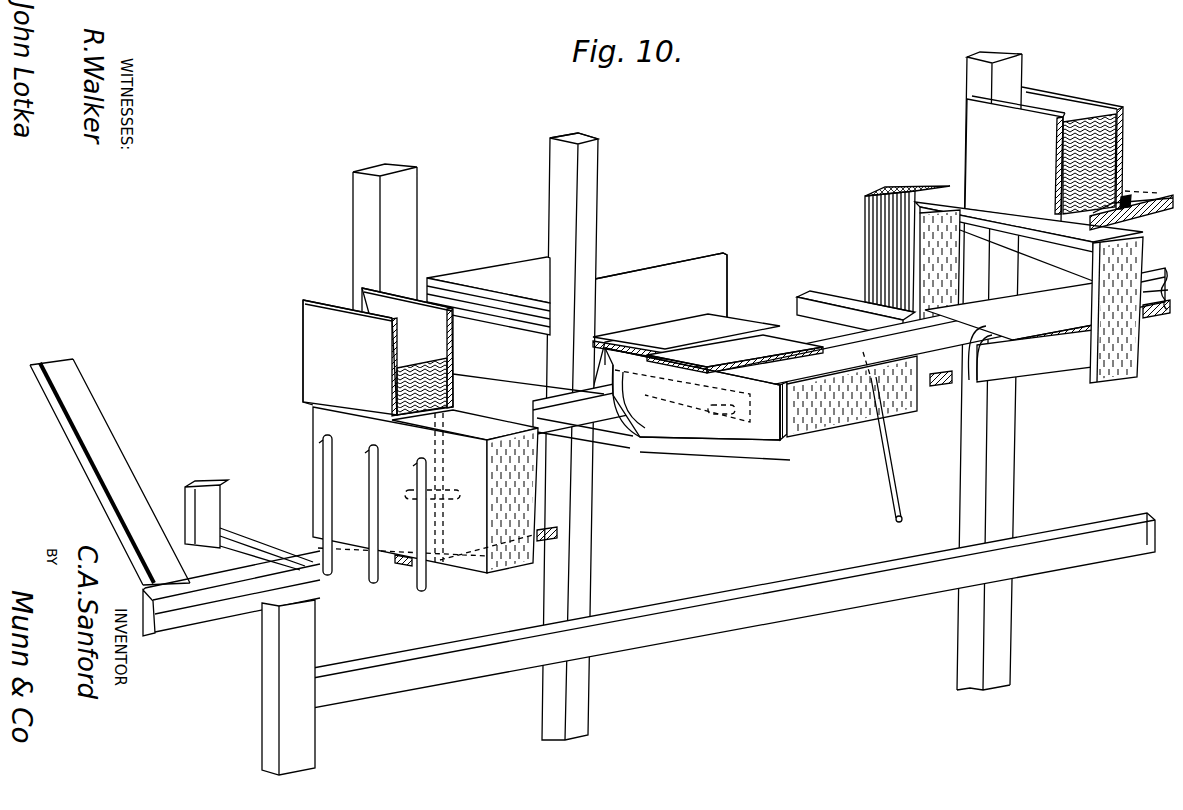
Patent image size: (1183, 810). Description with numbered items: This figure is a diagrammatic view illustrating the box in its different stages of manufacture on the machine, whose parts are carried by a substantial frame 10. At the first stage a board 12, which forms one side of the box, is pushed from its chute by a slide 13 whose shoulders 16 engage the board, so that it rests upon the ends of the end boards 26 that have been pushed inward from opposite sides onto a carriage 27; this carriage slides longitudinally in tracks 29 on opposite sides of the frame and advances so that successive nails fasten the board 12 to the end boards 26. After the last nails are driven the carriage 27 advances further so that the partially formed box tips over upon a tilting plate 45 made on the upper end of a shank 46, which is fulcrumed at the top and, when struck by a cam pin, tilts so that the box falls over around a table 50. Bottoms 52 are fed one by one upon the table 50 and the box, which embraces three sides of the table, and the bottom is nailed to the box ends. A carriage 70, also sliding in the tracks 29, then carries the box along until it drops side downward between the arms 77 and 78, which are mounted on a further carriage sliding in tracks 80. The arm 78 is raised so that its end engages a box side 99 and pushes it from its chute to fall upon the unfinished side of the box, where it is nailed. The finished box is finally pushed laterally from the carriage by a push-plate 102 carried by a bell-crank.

The frame 10 is at (734, 610).
The board 12 is at (1083, 118).
The slide 13 is at (1150, 198).
The shoulders 16 is at (1127, 198).
The end boards 26 is at (866, 257).
The carriage 27 is at (1030, 354).
The tracks 29 is at (851, 351).
The tilting plate 45 is at (940, 388).
The shank 46 is at (892, 437).
The table 50 is at (735, 354).
The bottoms 52 is at (691, 339).
The carriage 70 is at (127, 487).
The arm 77 is at (372, 513).
The arm 78 is at (446, 456).
The tracks 80 is at (245, 592).
The box side 99 is at (415, 355).
The push-plate 102 is at (227, 508).